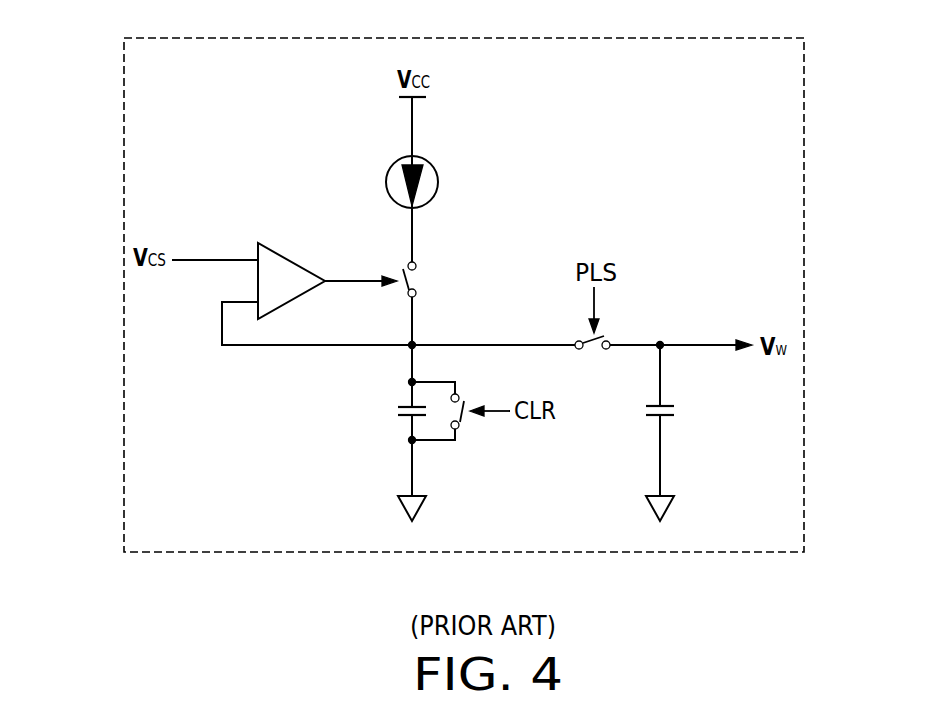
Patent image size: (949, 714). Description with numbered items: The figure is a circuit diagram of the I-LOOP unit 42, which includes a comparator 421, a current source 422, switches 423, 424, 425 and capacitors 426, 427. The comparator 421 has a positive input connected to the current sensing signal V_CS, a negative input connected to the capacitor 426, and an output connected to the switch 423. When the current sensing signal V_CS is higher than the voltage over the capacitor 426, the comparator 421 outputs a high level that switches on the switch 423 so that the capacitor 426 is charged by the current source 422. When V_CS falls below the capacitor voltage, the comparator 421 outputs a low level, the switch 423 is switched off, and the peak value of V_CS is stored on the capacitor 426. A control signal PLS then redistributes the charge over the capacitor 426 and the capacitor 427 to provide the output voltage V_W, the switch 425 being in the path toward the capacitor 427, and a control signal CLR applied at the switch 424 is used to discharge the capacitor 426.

The I-LOOP unit 42 is at (804, 128).
The comparator 421 is at (292, 261).
The current source 422 is at (437, 170).
The switch 423 is at (418, 280).
The switch 424 is at (470, 428).
The switch 425 is at (597, 350).
The capacitor 426 is at (393, 412).
The capacitor 427 is at (680, 410).